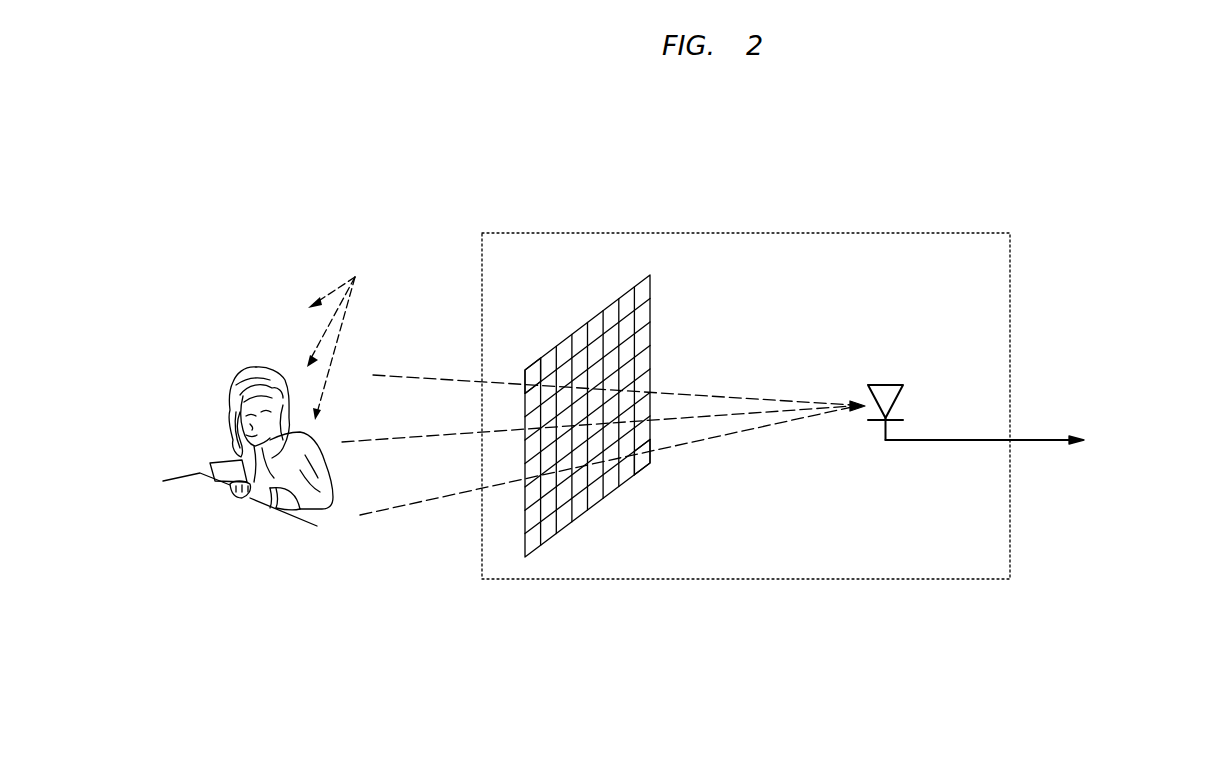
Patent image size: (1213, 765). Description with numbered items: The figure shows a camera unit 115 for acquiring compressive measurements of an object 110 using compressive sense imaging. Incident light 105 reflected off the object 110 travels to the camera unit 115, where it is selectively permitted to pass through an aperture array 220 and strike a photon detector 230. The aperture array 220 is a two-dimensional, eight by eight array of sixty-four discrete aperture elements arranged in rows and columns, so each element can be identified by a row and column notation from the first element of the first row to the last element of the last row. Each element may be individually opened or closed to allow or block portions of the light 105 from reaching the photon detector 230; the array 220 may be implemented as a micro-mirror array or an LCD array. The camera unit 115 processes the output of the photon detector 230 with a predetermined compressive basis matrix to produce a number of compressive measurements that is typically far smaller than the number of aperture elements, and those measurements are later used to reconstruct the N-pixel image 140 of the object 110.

The incident light 105 is at (353, 277).
The object 110 is at (258, 367).
The camera unit 115 is at (782, 233).
The aperture array 220 is at (535, 548).
The photon detector 230 is at (888, 384).
The N-pixel image 140 is at (1043, 442).